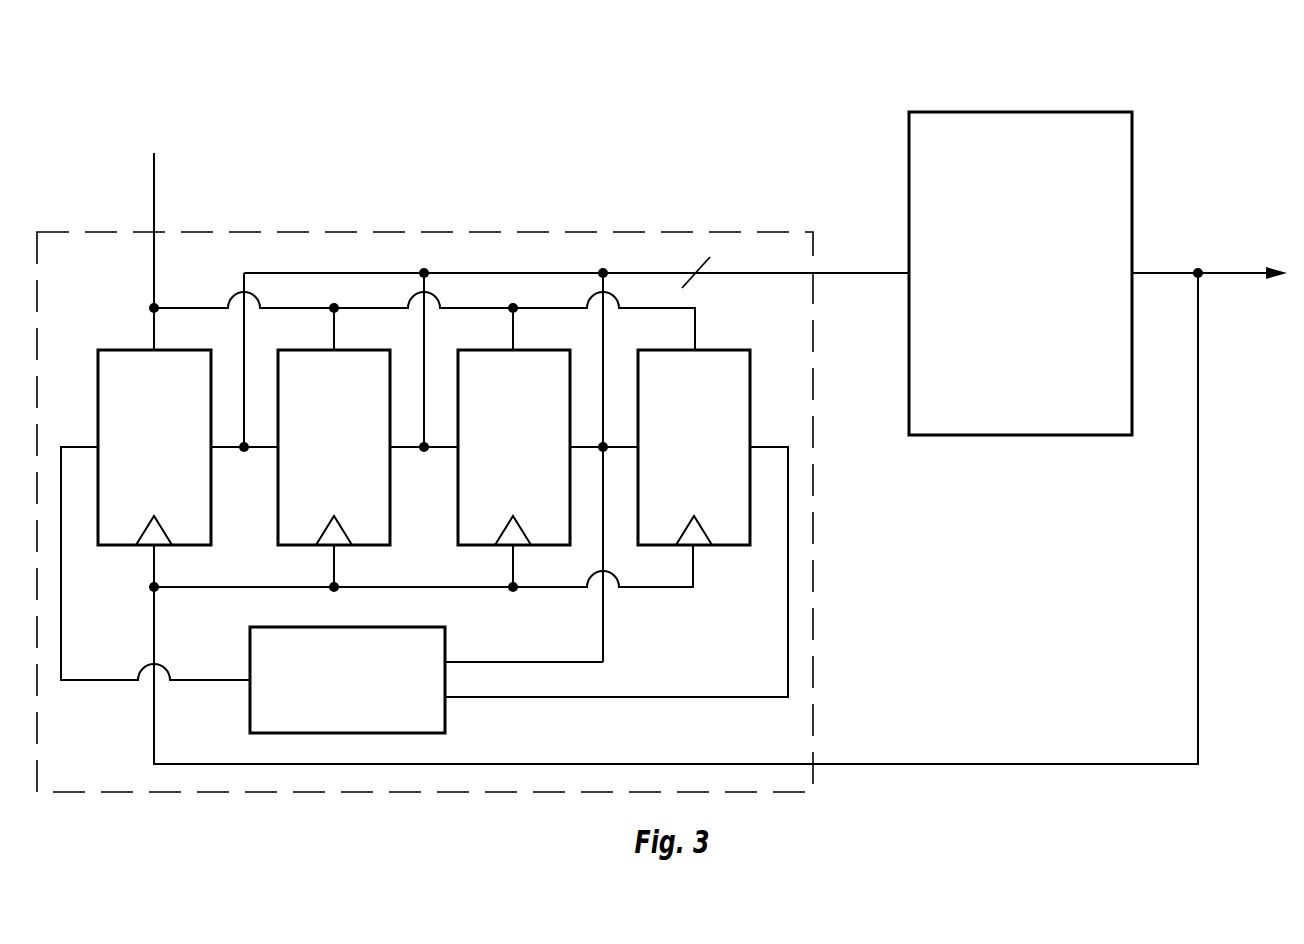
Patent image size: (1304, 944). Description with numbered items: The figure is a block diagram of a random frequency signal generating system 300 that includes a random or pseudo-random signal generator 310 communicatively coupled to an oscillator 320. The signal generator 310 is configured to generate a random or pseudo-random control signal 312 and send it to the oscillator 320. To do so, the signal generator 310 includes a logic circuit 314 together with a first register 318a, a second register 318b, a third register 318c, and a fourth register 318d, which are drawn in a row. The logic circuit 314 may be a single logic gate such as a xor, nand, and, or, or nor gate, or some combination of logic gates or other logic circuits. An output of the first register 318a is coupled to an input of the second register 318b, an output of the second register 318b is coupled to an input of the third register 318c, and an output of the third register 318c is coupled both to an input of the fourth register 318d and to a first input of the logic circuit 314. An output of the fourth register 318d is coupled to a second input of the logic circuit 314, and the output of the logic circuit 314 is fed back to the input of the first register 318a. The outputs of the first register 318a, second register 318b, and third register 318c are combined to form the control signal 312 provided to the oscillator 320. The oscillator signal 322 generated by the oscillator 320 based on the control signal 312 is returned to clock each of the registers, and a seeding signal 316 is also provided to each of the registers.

The random frequency signal generating system 300 is at (120, 90).
The signal generator 310 is at (428, 232).
The control signal 312 is at (828, 273).
The logic circuit 314 is at (332, 705).
The seeding signal 316 is at (154, 207).
The first register 318a is at (133, 460).
The second register 318b is at (313, 460).
The third register 318c is at (493, 460).
The fourth register 318d is at (673, 460).
The oscillator 320 is at (1005, 305).
The oscillator signal 322 is at (1220, 273).